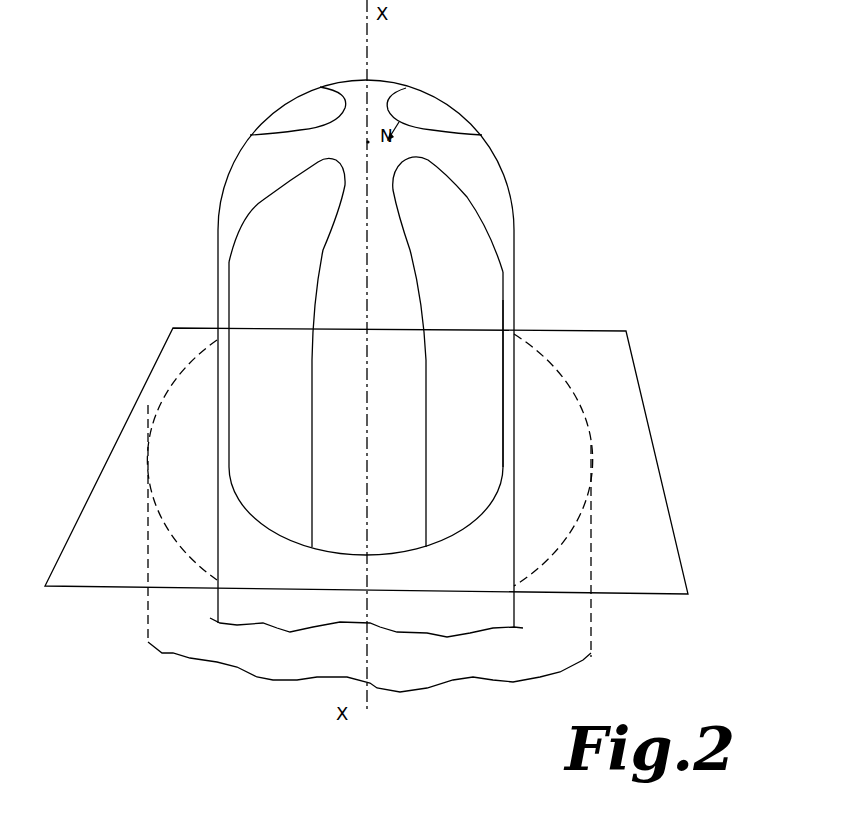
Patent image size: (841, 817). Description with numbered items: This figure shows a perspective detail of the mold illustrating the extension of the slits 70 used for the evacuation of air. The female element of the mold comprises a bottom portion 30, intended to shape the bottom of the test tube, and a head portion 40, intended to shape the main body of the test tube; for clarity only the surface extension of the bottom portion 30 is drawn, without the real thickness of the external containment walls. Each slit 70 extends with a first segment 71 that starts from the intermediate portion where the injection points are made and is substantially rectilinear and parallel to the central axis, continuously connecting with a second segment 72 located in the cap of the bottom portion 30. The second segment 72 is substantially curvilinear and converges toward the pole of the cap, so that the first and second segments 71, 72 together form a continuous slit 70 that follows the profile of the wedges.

The bottom portion 30 is at (487, 80).
The slits 70 is at (248, 123).
The first segment 71 is at (510, 405).
The second segment 72 is at (470, 198).
The head portion 40 is at (140, 605).